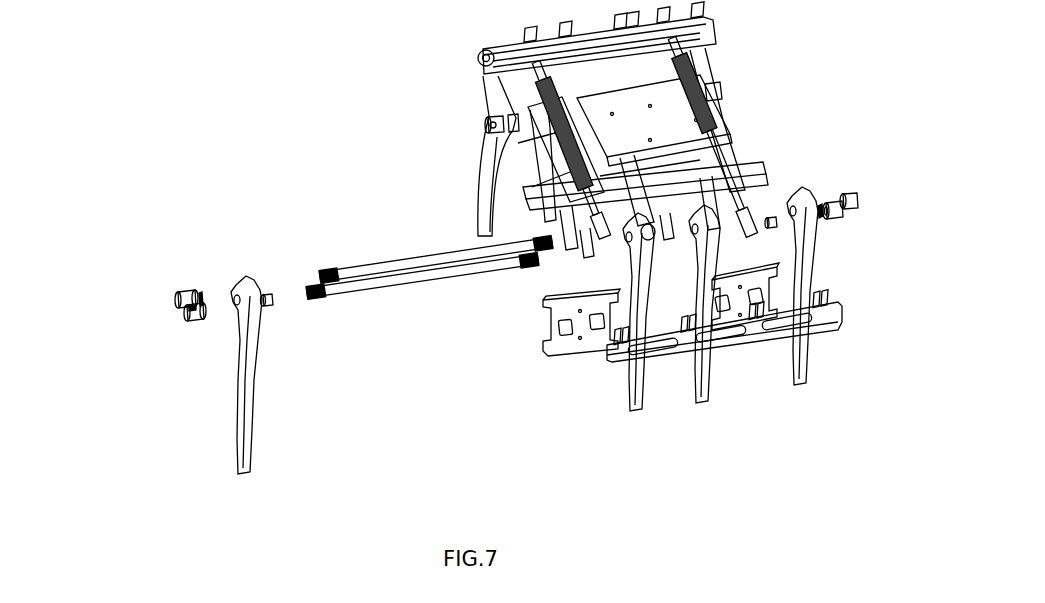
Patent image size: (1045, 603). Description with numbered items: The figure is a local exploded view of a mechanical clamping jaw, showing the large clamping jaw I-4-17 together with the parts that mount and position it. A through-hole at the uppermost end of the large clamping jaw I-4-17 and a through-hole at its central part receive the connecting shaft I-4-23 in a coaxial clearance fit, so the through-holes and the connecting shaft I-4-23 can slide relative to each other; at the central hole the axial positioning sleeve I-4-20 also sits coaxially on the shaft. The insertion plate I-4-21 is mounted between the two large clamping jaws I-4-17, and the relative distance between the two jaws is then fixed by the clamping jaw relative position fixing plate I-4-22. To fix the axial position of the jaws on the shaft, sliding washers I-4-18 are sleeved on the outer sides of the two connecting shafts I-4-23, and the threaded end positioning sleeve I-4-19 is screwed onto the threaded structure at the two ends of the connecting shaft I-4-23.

The large clamping jaw I-4-17 is at (246, 275).
The sliding washer I-4-18 is at (202, 313).
The end positioning sleeve I-4-19 is at (176, 302).
The axial positioning sleeve I-4-20 is at (267, 306).
The insertion plate I-4-21 is at (557, 350).
The clamping jaw relative position fixing plate I-4-22 is at (693, 340).
The connecting shaft I-4-23 is at (337, 263).